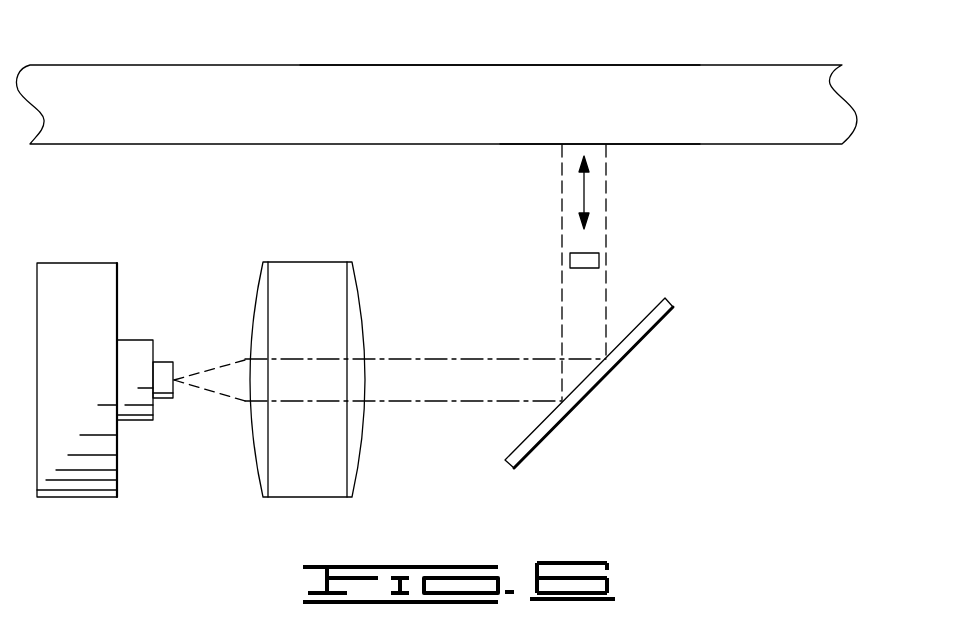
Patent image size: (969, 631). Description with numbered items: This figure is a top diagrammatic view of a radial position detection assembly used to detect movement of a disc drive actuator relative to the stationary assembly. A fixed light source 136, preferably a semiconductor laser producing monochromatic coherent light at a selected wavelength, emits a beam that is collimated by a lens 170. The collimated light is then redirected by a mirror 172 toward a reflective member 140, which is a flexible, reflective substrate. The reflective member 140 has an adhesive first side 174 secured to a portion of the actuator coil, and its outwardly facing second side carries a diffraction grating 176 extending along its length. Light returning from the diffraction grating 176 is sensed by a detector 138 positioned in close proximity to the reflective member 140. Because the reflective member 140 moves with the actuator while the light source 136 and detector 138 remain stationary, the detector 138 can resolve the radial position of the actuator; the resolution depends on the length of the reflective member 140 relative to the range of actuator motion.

The light source 136 is at (80, 462).
The detector 138 is at (580, 252).
The reflective member 140 is at (757, 128).
The lens 170 is at (310, 460).
The mirror 172 is at (593, 388).
The adhesive first side 174 is at (481, 65).
The diffraction grating 176 is at (640, 147).